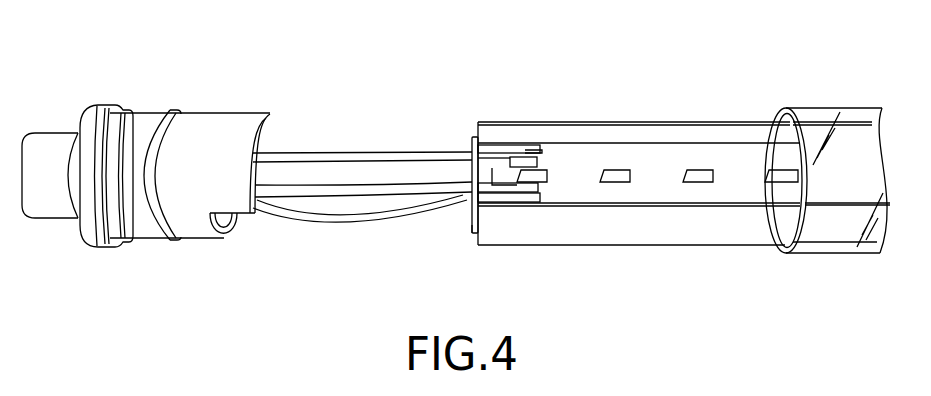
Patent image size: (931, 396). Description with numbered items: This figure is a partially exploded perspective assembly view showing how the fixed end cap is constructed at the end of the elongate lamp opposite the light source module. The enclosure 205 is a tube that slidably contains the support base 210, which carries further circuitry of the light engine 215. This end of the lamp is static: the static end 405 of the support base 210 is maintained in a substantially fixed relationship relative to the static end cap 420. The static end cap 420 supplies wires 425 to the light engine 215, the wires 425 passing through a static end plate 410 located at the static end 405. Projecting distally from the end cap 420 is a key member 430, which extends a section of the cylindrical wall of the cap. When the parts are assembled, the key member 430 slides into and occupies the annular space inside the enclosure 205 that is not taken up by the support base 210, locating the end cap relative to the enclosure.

The enclosure 205 is at (817, 118).
The support base 210 is at (558, 122).
The light engine 215 is at (712, 130).
The static end 405 is at (472, 137).
The static end plate 410 is at (472, 225).
The static end cap 420 is at (140, 127).
The wires 425 is at (377, 128).
The key member 430 is at (242, 133).